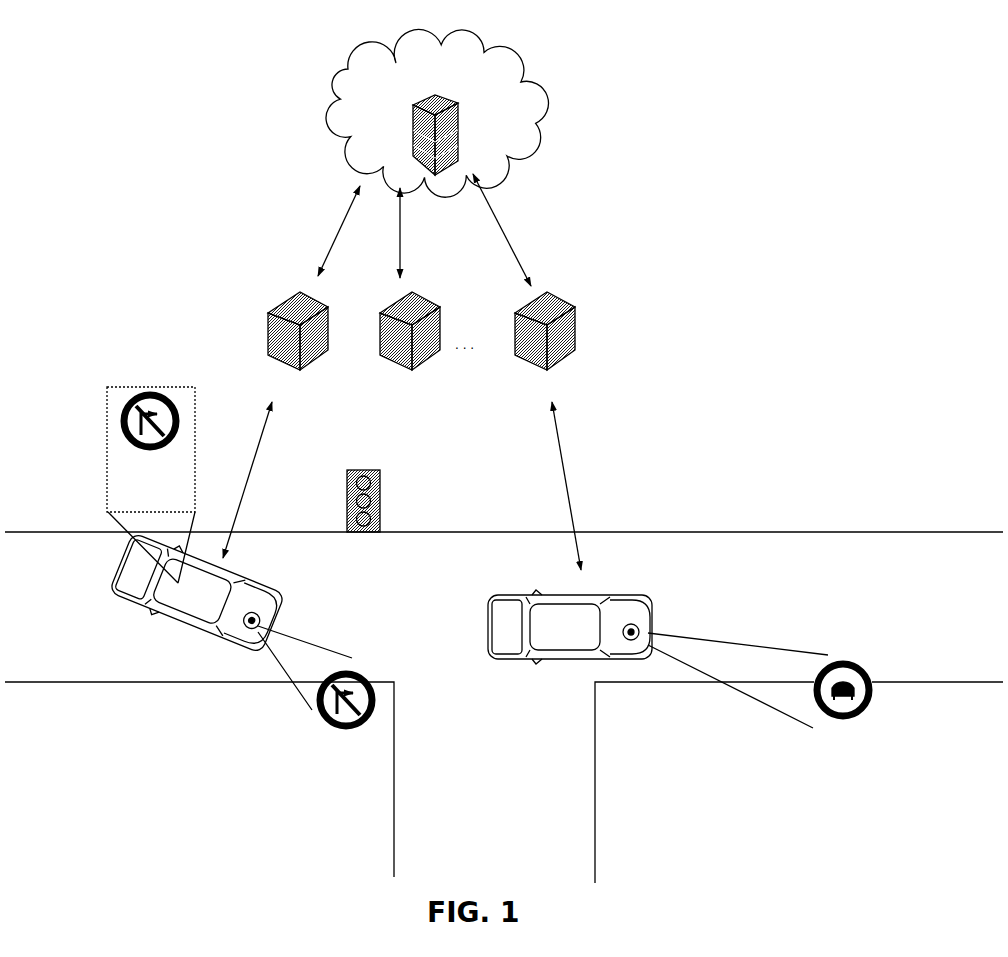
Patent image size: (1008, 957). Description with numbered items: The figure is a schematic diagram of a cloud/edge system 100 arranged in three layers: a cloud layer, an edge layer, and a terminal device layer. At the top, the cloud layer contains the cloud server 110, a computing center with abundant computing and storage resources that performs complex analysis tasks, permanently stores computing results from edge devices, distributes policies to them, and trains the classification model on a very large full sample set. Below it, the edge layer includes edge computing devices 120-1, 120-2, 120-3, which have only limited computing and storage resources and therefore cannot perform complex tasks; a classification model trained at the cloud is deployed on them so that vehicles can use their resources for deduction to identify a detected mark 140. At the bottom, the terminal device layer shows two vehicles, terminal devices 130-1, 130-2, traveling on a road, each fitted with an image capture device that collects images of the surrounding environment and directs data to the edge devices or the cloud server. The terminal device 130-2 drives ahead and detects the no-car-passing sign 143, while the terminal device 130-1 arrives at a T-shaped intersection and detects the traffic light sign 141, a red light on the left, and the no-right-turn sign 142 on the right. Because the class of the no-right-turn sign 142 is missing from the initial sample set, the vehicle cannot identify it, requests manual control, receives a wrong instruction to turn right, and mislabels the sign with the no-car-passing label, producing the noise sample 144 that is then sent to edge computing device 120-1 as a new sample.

The cloud/edge system 100 is at (586, 34).
The cloud server 110 is at (508, 45).
The edge computing device 120-1 is at (316, 294).
The edge computing device 120-2 is at (425, 294).
The edge computing device 120-3 is at (557, 294).
The terminal device 130-1 is at (229, 619).
The terminal device 130-2 is at (658, 654).
The mark 140 is at (414, 445).
The traffic light sign 141 is at (365, 471).
The no-right-turn sign 142 is at (368, 672).
The no-car-passing sign 143 is at (862, 663).
The noise sample 144 is at (165, 388).